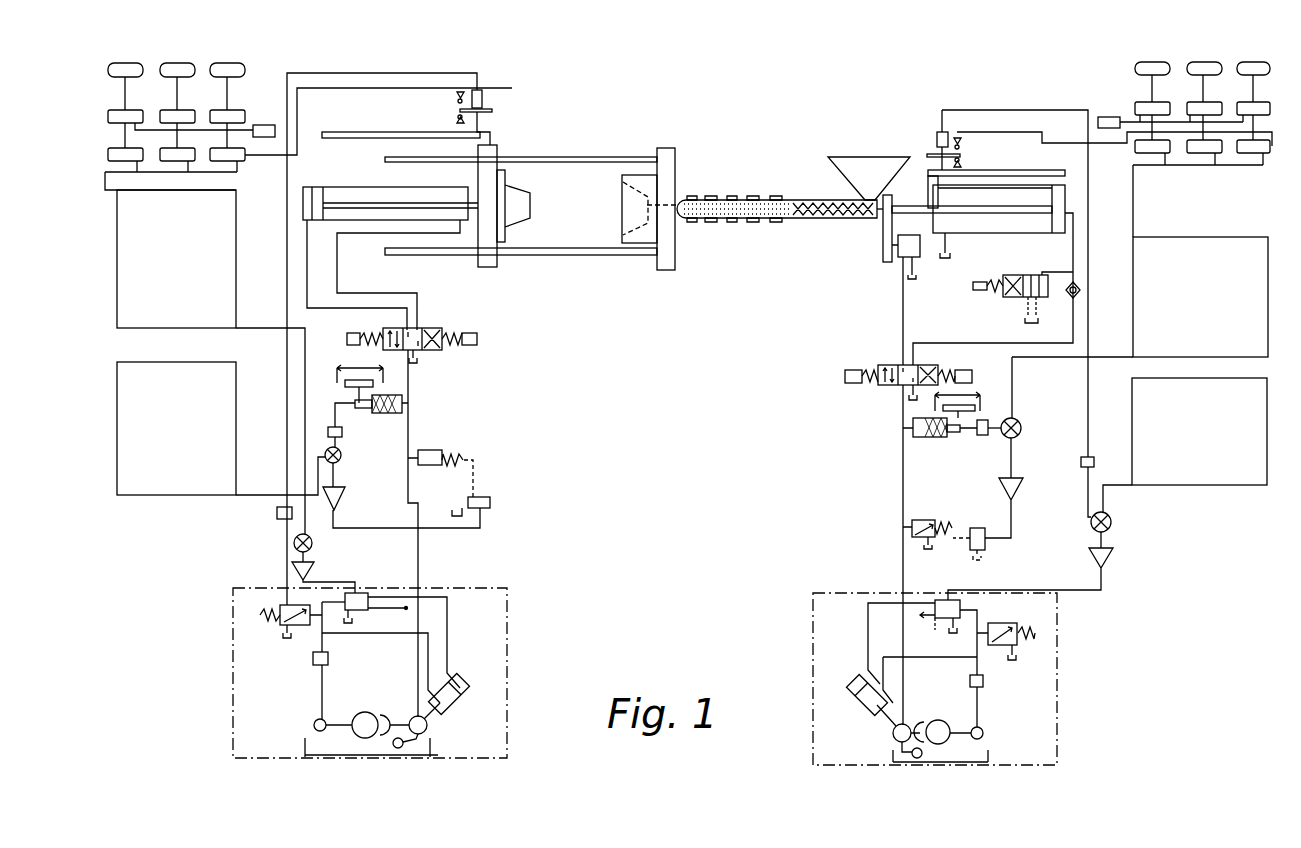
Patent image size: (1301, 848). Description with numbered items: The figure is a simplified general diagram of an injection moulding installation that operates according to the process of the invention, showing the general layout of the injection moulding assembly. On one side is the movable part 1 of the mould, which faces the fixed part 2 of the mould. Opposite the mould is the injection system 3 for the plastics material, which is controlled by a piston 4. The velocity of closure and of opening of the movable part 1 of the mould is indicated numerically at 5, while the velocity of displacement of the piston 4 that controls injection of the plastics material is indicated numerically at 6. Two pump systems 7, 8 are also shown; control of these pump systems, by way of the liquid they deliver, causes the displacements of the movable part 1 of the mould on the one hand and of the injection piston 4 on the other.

The movable part of the mould 1 is at (498, 150).
The fixed part of the mould 2 is at (640, 182).
The injection system 3 is at (720, 205).
The piston 4 is at (1055, 193).
The velocity of closure and of opening 5 is at (126, 63).
The velocity of displacement of the piston 6 is at (1243, 63).
The pump system 7 is at (498, 657).
The pump system 8 is at (1050, 668).